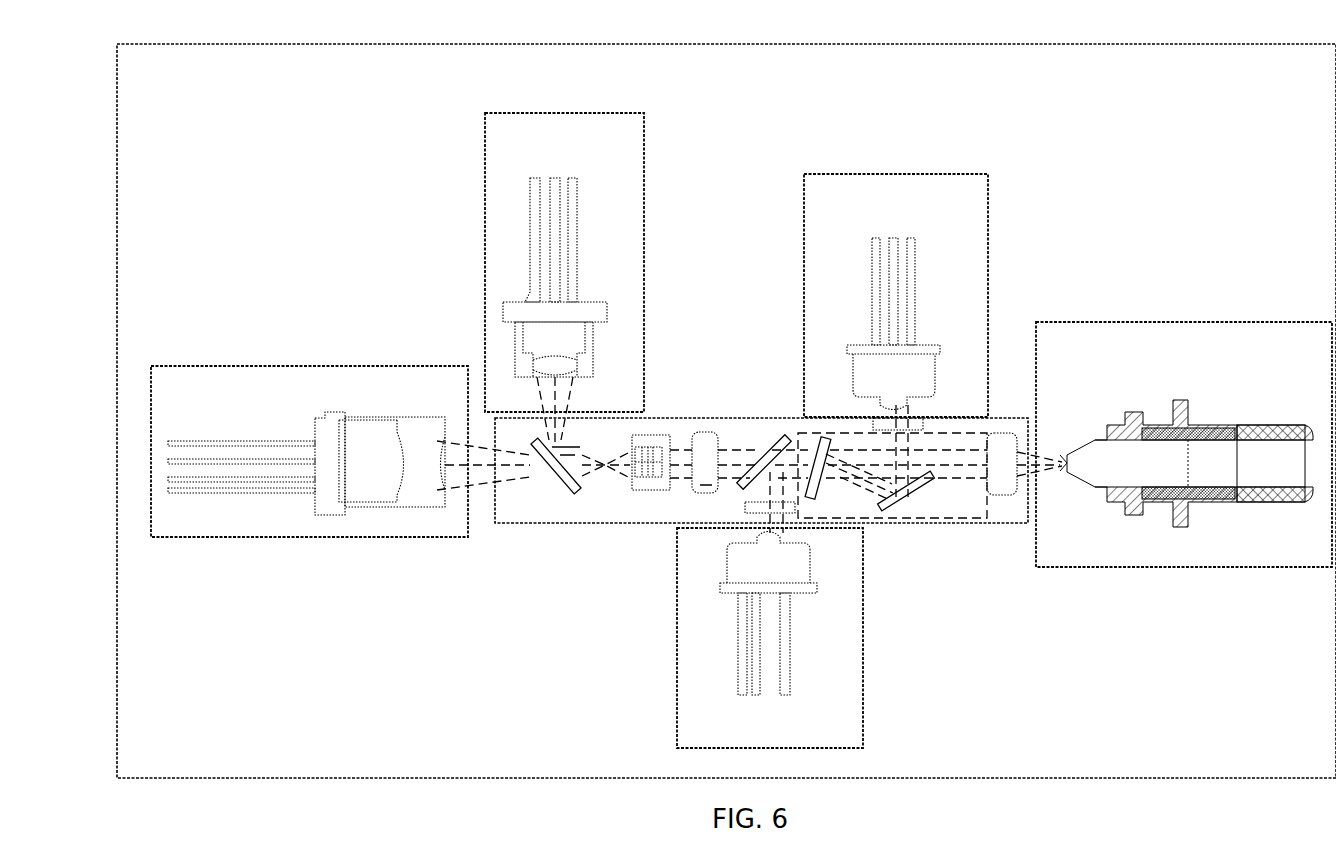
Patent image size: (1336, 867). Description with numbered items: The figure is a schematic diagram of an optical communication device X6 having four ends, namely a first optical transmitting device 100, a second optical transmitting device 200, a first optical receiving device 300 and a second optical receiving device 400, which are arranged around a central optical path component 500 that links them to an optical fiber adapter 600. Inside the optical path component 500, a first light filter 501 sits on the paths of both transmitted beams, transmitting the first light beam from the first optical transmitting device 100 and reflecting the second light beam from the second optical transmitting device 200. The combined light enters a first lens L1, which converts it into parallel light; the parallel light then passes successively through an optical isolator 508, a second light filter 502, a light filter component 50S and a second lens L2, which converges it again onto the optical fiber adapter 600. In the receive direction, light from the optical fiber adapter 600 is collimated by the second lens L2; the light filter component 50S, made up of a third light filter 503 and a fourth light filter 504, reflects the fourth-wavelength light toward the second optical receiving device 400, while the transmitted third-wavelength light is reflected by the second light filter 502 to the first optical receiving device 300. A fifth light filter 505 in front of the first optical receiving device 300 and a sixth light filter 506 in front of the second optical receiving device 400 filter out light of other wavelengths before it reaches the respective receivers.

The optical communication device X6 is at (726, 411).
The first optical transmitting device 100 is at (309, 451).
The second optical transmitting device 200 is at (564, 262).
The first optical receiving device 300 is at (770, 638).
The second optical receiving device 400 is at (896, 295).
The optical path component 500 is at (761, 470).
The light filter component 50S is at (892, 475).
The optical fiber adapter 600 is at (1184, 444).
The first light filter 501 is at (565, 488).
The second light filter 502 is at (750, 487).
The third light filter 503 is at (820, 470).
The fourth light filter 504 is at (903, 493).
The fifth light filter 505 is at (773, 500).
The sixth light filter 506 is at (895, 416).
The optical isolator 508 is at (653, 490).
The first lens L1 is at (707, 495).
The second lens L2 is at (1002, 485).